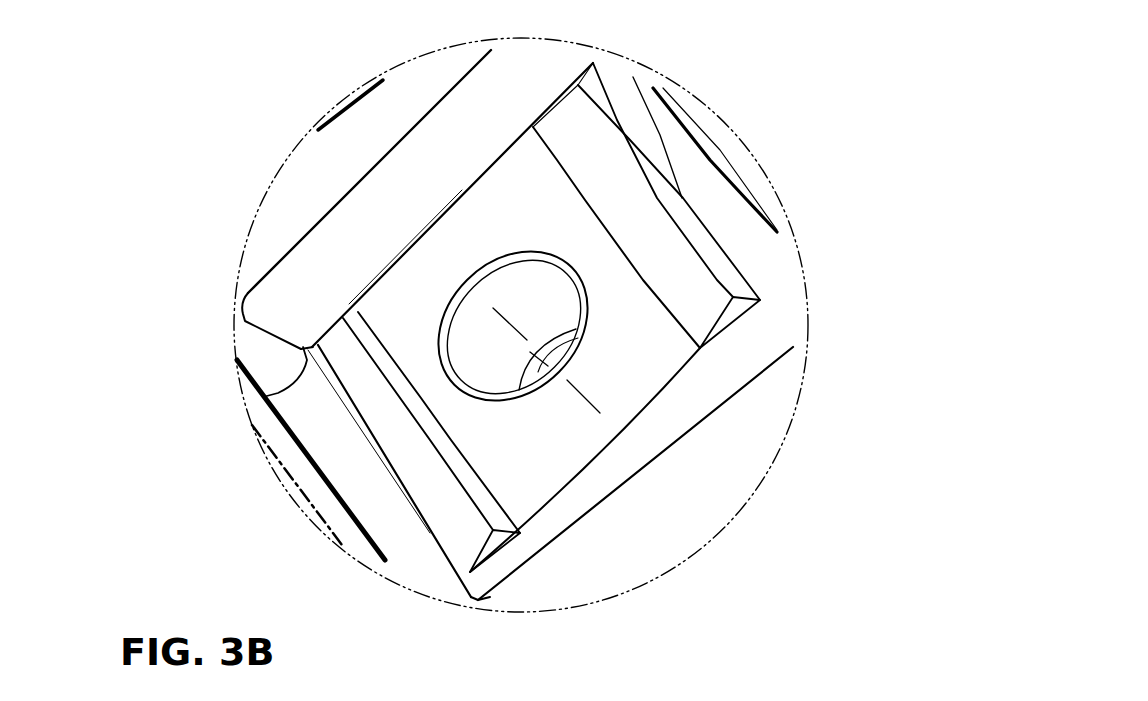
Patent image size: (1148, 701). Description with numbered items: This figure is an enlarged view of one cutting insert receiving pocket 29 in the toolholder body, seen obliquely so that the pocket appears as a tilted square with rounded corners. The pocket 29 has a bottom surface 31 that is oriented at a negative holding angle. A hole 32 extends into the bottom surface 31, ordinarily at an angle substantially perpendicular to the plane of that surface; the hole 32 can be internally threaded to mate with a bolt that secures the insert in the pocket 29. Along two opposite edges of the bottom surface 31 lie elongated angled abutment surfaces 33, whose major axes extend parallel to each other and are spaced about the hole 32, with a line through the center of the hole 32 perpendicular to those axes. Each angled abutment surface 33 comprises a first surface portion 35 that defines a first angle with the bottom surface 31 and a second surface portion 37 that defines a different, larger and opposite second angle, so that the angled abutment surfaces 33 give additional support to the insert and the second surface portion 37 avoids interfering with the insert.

The cutting insert receiving pocket 29 is at (412, 323).
The bottom surface 31 is at (642, 368).
The hole 32 is at (527, 302).
The angled abutment surface 33 is at (623, 213).
The first surface portion 35 is at (690, 299).
The second surface portion 37 is at (627, 142).